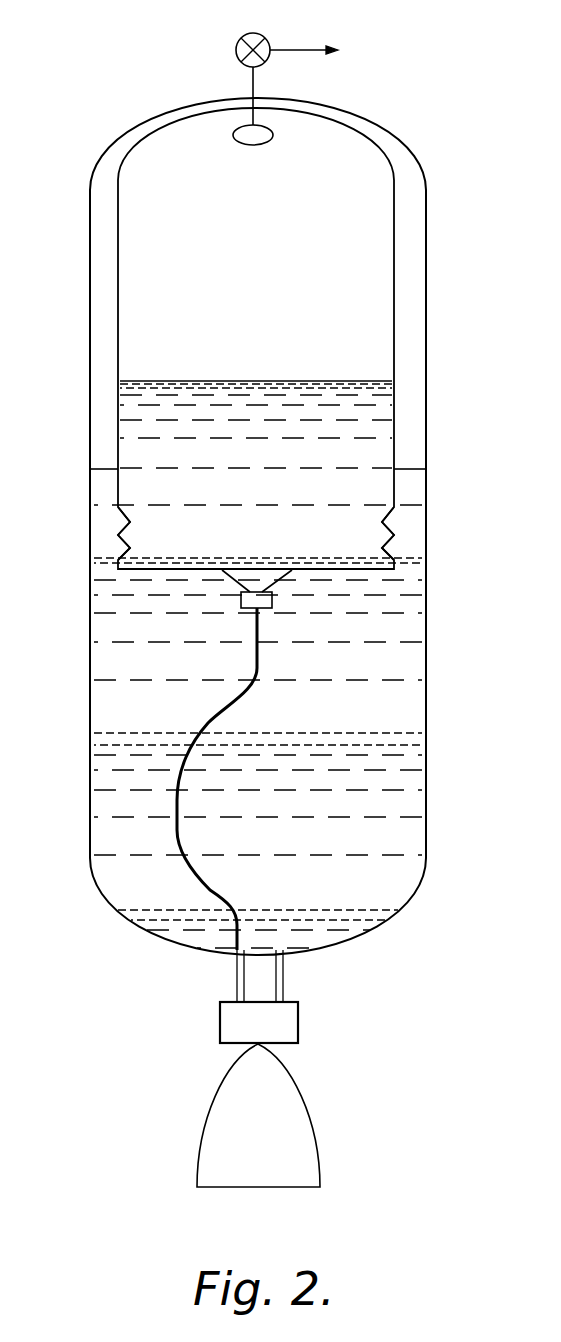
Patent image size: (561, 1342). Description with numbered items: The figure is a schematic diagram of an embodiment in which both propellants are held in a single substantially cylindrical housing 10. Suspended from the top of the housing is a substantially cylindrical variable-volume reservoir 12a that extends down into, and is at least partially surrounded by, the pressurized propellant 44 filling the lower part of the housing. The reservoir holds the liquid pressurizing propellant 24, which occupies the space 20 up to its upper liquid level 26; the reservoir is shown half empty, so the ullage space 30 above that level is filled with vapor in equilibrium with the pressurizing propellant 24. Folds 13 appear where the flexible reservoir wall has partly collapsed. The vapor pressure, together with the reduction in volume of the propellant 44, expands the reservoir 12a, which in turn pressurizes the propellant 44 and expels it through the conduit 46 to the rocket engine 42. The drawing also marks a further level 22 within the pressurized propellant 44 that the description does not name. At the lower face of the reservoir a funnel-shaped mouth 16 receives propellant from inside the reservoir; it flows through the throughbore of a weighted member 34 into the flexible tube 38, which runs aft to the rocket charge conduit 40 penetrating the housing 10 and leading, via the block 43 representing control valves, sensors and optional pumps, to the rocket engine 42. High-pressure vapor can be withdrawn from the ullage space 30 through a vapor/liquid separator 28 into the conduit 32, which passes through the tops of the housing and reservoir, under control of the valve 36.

The housing 10 is at (419, 174).
The reservoir 12a is at (396, 481).
The folds 13 is at (406, 546).
The funnel-shaped mouth 16 is at (260, 559).
The space 20 is at (378, 443).
The second liquid surface 22 is at (386, 745).
The pressurizing propellant 24 is at (272, 494).
The upper liquid level 26 is at (357, 381).
The vapor/liquid separator 28 is at (273, 134).
The ullage space 30 is at (274, 276).
The conduit 32 is at (250, 88).
The weighted member 34 is at (272, 597).
The valve 36 is at (241, 40).
The flexible tube 38 is at (177, 787).
The rocket charge conduit 40 is at (233, 975).
The rocket engine 42 is at (276, 1133).
The block 43 is at (298, 1027).
The pressurized propellant 44 is at (282, 728).
The conduit 46 is at (288, 975).